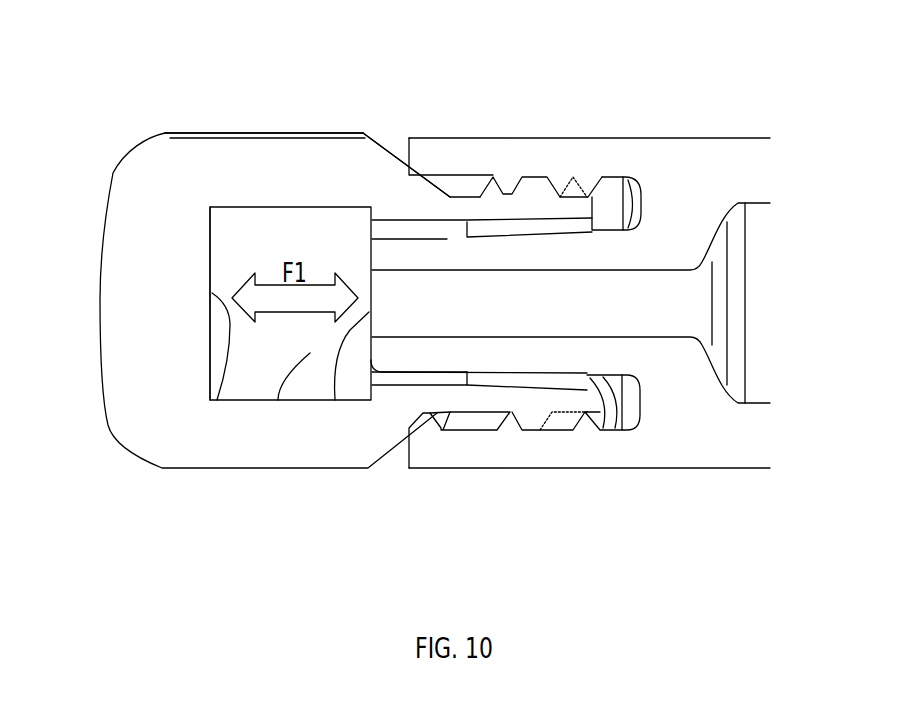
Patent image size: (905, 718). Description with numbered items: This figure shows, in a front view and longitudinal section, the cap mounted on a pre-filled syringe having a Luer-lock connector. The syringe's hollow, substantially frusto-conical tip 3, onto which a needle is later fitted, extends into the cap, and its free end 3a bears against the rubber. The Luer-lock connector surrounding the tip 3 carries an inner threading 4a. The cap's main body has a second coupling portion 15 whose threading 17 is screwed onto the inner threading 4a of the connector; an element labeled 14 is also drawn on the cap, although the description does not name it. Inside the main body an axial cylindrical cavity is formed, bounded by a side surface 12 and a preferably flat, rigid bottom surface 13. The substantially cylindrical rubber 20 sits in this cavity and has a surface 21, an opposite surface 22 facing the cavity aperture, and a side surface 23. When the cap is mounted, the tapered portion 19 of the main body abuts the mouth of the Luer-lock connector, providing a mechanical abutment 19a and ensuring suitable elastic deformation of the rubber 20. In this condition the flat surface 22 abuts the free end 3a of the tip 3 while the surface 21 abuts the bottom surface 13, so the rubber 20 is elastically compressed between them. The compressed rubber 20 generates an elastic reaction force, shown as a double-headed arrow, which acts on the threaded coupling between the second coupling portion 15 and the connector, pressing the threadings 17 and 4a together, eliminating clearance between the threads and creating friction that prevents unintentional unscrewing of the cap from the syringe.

The tip 3 is at (648, 305).
The free end of the tip 3a is at (370, 348).
The inner threading 4a is at (560, 185).
The side surface 12 is at (233, 207).
The bottom surface 13 is at (212, 250).
The connector 14 is at (233, 128).
The second coupling portion 15 is at (512, 424).
The threading 17 is at (536, 192).
The tapered portion 19 is at (380, 156).
The mechanical abutment 19a is at (420, 174).
The rubber 20 is at (278, 400).
The surface 21 is at (217, 400).
The surface 22 is at (335, 400).
The side surface 23 is at (322, 214).